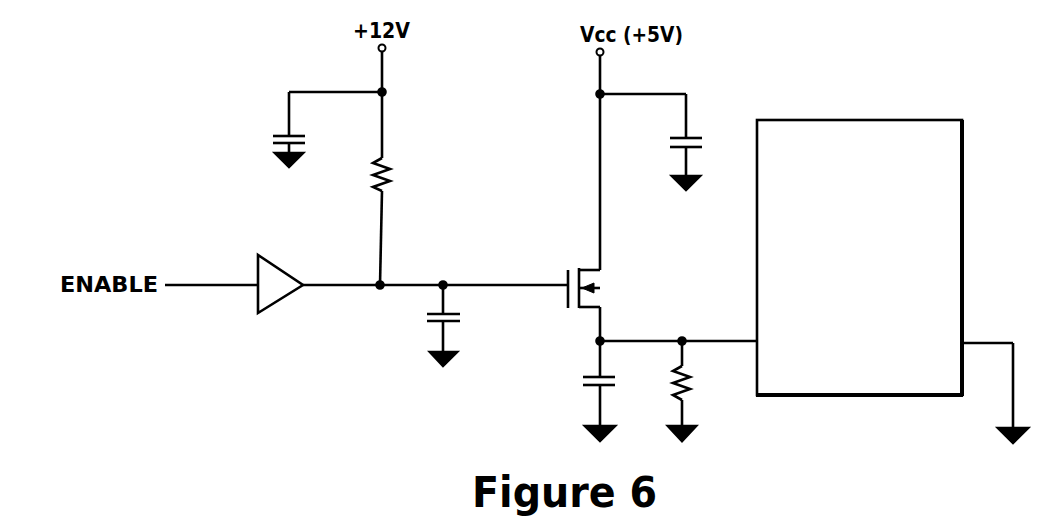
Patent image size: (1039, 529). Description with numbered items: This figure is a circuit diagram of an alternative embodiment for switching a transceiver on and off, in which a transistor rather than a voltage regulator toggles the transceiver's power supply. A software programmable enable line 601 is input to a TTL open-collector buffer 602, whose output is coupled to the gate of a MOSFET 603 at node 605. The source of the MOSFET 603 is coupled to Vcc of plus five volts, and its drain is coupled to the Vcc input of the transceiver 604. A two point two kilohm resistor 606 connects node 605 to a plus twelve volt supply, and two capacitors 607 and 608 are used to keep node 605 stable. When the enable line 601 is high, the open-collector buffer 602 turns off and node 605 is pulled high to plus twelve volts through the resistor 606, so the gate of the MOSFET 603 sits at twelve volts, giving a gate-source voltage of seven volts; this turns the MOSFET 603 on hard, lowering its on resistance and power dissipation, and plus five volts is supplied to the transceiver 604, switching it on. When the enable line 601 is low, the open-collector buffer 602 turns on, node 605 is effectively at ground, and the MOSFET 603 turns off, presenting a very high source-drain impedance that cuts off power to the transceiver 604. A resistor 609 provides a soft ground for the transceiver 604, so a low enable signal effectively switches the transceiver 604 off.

The enable line 601 is at (193, 283).
The open-collector buffer 602 is at (277, 266).
The MOSFET 603 is at (568, 273).
The transceiver 604 is at (927, 120).
The node 605 is at (466, 265).
The resistor 606 is at (391, 168).
The capacitor 607 is at (280, 133).
The capacitor 608 is at (430, 323).
The resistor 609 is at (688, 392).